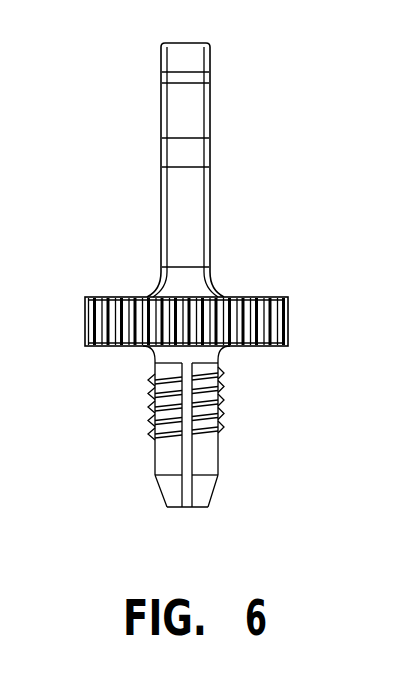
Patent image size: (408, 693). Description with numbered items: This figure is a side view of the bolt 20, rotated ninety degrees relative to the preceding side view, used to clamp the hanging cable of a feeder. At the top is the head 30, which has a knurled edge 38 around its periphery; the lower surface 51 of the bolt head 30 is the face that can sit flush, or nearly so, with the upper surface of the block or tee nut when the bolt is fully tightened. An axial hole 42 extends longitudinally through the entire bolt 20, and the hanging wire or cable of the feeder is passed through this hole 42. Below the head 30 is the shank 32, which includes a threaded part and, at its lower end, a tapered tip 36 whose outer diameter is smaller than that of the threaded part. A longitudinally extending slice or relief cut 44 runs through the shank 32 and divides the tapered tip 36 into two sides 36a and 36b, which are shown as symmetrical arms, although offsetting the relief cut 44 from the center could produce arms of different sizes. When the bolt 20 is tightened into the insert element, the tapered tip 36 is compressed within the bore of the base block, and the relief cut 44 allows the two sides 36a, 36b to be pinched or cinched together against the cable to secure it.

The bolt 20 is at (233, 70).
The axial hole 42 is at (192, 118).
The head 30 is at (264, 297).
The knurled edge 38 is at (288, 318).
The lower surface of the bolt head 51 is at (110, 350).
The shank 32 is at (130, 402).
The relief cut 44 is at (186, 456).
The tapered tip 36 is at (220, 492).
The side of the tapered tip 36a is at (168, 485).
The side of the tapered tip 36b is at (198, 505).